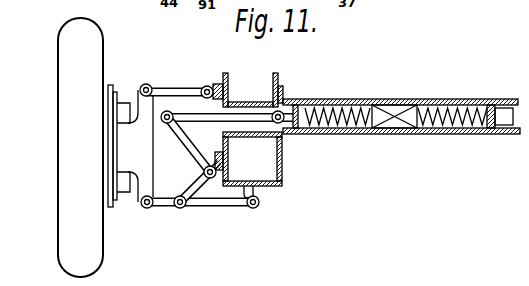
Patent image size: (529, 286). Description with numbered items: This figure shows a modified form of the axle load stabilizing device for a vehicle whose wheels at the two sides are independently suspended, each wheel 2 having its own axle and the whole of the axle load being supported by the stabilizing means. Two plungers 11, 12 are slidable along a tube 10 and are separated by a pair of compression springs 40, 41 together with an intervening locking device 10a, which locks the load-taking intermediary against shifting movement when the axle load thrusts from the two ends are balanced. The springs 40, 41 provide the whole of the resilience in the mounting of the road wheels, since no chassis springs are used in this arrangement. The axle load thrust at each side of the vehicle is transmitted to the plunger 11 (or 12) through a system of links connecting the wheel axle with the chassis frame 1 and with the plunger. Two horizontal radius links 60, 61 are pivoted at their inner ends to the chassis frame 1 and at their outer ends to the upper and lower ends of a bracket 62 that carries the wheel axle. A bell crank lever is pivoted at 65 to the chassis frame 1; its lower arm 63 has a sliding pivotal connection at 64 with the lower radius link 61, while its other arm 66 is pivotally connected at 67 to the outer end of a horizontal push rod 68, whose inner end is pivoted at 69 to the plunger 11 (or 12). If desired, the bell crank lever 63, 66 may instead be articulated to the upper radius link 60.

The chassis frame 1 is at (282, 157).
The wheel 2 is at (65, 137).
The tube 10 is at (388, 102).
The locking device 10a is at (393, 120).
The plunger 11 is at (302, 132).
The plunger 12 is at (492, 132).
The compression spring 40 is at (346, 104).
The compression spring 41 is at (460, 102).
The upper radius link 60 is at (172, 92).
The lower radius link 61 is at (208, 206).
The bracket 62 is at (147, 138).
The lower arm of bell crank lever 63 is at (191, 200).
The sliding pivotal connection 64 is at (177, 207).
The pivot 65 is at (212, 175).
The arm of bell crank lever 66 is at (193, 150).
The pivot 67 is at (165, 112).
The push rod 68 is at (228, 118).
The pivot 69 is at (297, 107).